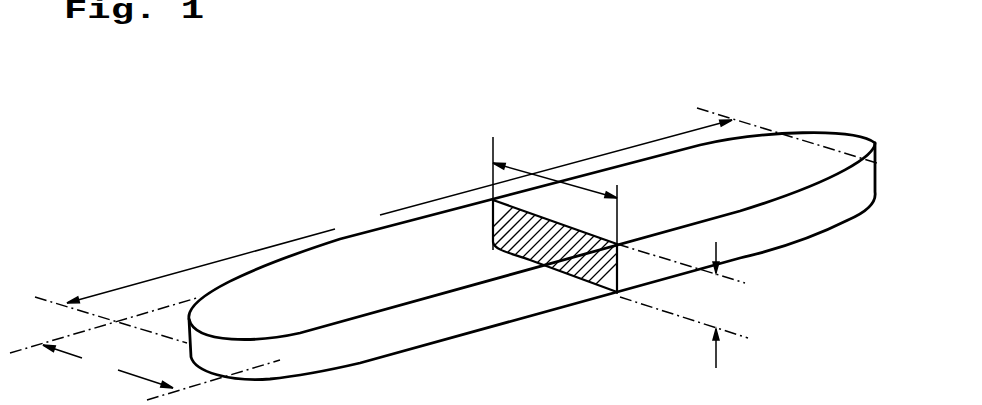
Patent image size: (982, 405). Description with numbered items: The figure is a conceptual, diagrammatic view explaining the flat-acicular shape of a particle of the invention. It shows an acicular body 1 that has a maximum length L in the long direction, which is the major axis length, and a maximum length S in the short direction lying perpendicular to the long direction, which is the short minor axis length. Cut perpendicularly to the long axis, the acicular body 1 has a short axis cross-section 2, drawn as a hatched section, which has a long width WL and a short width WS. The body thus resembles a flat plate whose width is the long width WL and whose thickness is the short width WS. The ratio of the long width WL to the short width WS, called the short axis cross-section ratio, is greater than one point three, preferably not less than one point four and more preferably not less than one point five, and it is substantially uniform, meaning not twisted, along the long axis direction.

The acicular body 1 is at (758, 166).
The short axis cross-section 2 is at (490, 233).
The maximum length in the long direction L is at (456, 225).
The maximum length in the short direction S is at (145, 348).
The long width WL is at (550, 176).
The short width WS is at (744, 305).